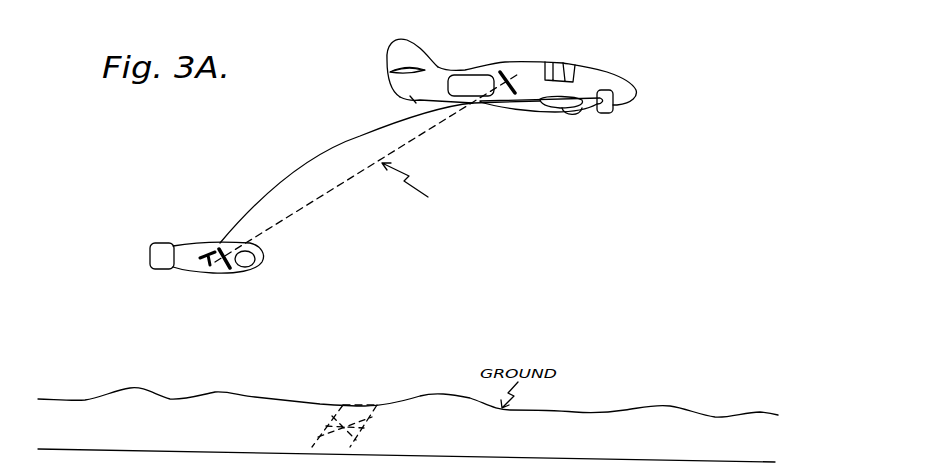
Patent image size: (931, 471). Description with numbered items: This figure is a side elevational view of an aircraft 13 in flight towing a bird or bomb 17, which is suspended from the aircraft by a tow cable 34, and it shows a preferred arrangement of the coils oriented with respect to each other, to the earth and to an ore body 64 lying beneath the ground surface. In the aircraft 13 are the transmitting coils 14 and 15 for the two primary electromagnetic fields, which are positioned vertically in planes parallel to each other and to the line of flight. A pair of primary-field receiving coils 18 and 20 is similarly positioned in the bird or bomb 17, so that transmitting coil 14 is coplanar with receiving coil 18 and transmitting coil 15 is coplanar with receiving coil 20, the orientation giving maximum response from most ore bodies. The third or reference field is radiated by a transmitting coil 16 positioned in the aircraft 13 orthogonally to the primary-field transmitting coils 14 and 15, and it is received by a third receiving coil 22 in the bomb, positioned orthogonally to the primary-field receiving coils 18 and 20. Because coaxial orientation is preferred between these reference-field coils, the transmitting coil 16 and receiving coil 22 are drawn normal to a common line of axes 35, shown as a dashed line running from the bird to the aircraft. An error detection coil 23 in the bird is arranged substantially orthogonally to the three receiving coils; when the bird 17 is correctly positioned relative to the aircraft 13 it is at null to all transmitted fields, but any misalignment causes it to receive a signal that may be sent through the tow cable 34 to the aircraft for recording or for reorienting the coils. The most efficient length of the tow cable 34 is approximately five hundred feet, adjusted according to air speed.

The aircraft 13 is at (607, 72).
The transmitting coil 14 is at (452, 53).
The transmitting coil 15 is at (468, 76).
The reference-field transmitting coil 16 is at (511, 70).
The bird or bomb 17 is at (168, 237).
The primary-field receiving coil 18 is at (294, 268).
The primary-field receiving coil 20 is at (256, 261).
The reference-field receiving coil 22 is at (223, 271).
The error detection coil 23 is at (212, 269).
The tow cable 34 is at (325, 158).
The common line of axes 35 is at (420, 138).
The ore body 64 is at (370, 434).